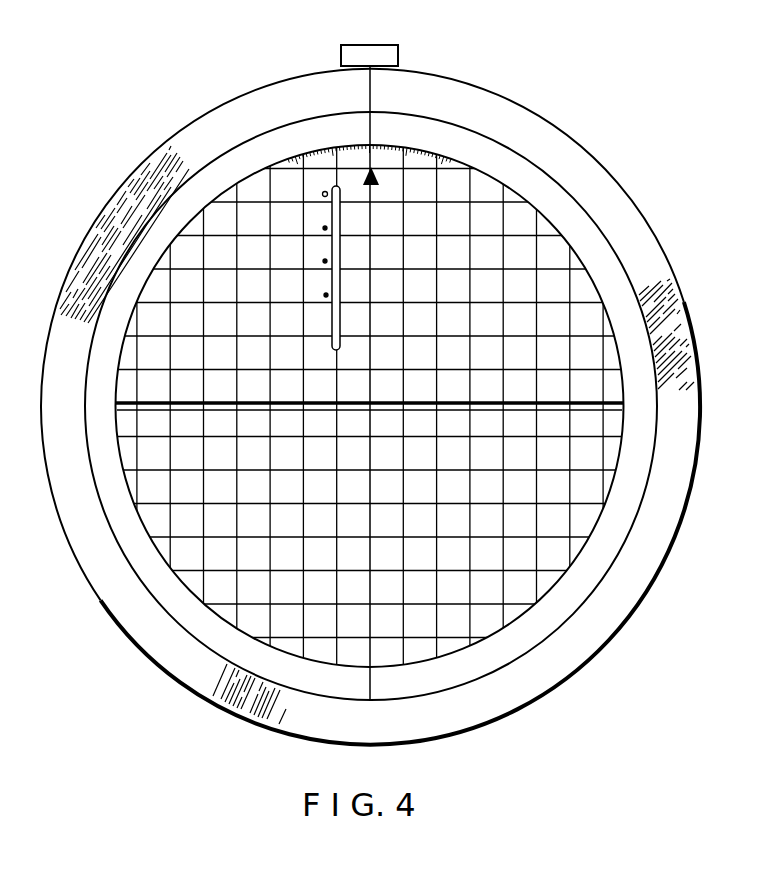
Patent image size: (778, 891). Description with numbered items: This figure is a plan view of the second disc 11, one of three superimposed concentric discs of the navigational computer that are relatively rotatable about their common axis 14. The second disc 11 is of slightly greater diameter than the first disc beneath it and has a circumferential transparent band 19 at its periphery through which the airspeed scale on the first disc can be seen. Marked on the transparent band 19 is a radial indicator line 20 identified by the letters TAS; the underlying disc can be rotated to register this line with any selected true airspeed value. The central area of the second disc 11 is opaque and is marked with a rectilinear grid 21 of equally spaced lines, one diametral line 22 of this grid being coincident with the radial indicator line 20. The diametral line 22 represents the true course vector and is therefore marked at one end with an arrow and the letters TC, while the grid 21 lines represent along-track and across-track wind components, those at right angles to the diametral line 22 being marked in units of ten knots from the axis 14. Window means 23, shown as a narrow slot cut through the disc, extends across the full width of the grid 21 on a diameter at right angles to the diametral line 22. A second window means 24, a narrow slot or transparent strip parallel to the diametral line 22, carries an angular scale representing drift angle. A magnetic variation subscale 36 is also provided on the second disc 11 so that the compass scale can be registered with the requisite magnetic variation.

The second disc 11 is at (370, 407).
The common axis 14 is at (369, 438).
The circumferential transparent band 19 is at (377, 402).
The radial indicator line 20 is at (397, 372).
The rectilinear grid 21 is at (375, 410).
The diametral line 22 is at (402, 420).
The window means 23 is at (396, 457).
The second window means 24 is at (313, 238).
The magnetic variation subscale 36 is at (372, 161).